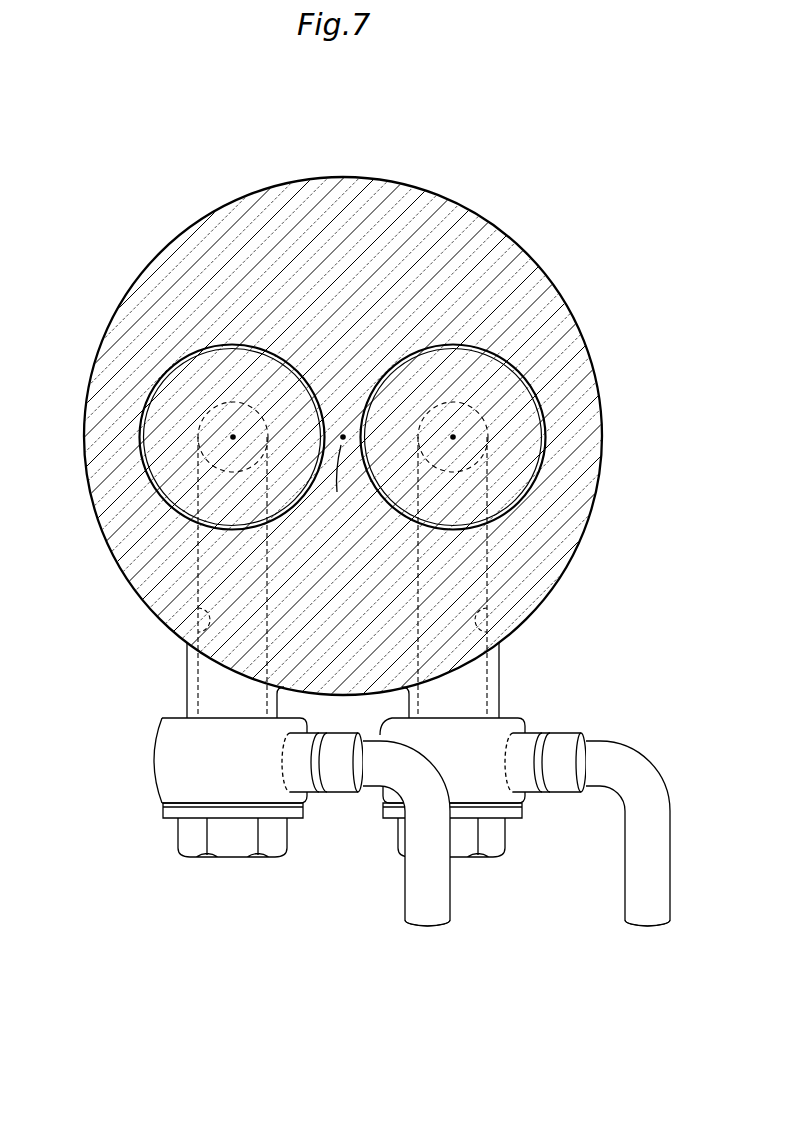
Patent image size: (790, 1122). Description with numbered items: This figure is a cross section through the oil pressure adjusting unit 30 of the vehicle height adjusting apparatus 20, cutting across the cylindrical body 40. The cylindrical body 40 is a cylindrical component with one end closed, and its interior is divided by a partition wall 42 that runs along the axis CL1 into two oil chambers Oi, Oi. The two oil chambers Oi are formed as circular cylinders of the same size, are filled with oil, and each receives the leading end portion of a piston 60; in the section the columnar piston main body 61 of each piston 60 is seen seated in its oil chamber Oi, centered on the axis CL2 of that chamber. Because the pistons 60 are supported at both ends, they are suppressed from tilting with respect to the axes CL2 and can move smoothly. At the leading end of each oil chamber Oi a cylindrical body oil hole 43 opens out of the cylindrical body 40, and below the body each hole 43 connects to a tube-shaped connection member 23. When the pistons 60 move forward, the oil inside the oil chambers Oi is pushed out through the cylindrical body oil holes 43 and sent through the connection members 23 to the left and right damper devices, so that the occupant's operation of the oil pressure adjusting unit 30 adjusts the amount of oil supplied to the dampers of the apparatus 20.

The vehicle height adjusting apparatus 20 is at (395, 561).
The oil pressure adjusting unit 30 is at (115, 175).
The cylindrical body 40 is at (480, 211).
The partition wall 42 is at (348, 417).
The cylindrical body oil hole 43 is at (210, 618).
The piston 60 is at (158, 378).
The piston main body 61 is at (200, 368).
The connection member 23 is at (405, 900).
The axis CL1 is at (334, 482).
The axis of oil chamber CL2 is at (236, 432).
The oil chamber Oi is at (307, 444).